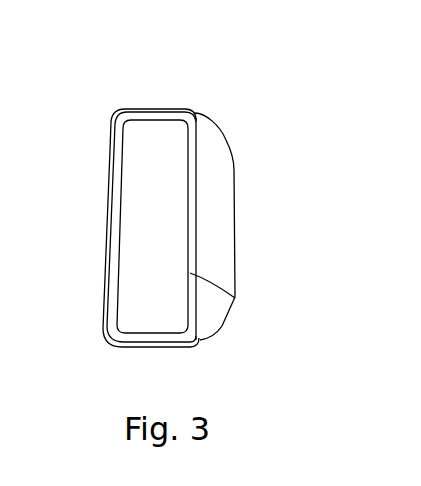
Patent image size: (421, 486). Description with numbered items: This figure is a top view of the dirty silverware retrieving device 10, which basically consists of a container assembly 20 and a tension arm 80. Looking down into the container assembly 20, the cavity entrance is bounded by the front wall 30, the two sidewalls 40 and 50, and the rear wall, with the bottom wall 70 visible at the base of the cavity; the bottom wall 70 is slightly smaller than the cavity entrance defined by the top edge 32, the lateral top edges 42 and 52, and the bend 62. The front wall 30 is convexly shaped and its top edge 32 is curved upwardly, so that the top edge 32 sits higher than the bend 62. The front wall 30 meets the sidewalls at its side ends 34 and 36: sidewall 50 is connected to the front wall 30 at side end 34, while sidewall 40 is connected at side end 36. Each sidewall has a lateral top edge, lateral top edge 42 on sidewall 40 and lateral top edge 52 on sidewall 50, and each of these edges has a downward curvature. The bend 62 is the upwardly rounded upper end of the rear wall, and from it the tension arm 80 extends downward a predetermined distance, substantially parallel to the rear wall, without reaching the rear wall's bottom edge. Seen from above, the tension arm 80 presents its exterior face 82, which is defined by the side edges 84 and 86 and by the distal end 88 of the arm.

The dirty silverware retrieving device 10 is at (214, 99).
The container assembly 20 is at (92, 177).
The front wall 30 is at (106, 248).
The top edge 32 is at (100, 273).
The side end 34 is at (114, 117).
The side end 36 is at (117, 346).
The sidewall 40 is at (168, 342).
The lateral top edge 42 is at (148, 348).
The sidewall 50 is at (158, 118).
The lateral top edge 52 is at (140, 110).
The bend 62 is at (237, 298).
The bottom wall 70 is at (150, 226).
The tension arm 80 is at (247, 186).
The exterior face 82 is at (207, 260).
The side edge 84 is at (223, 327).
The side edge 86 is at (218, 130).
The distal end 88 is at (235, 227).